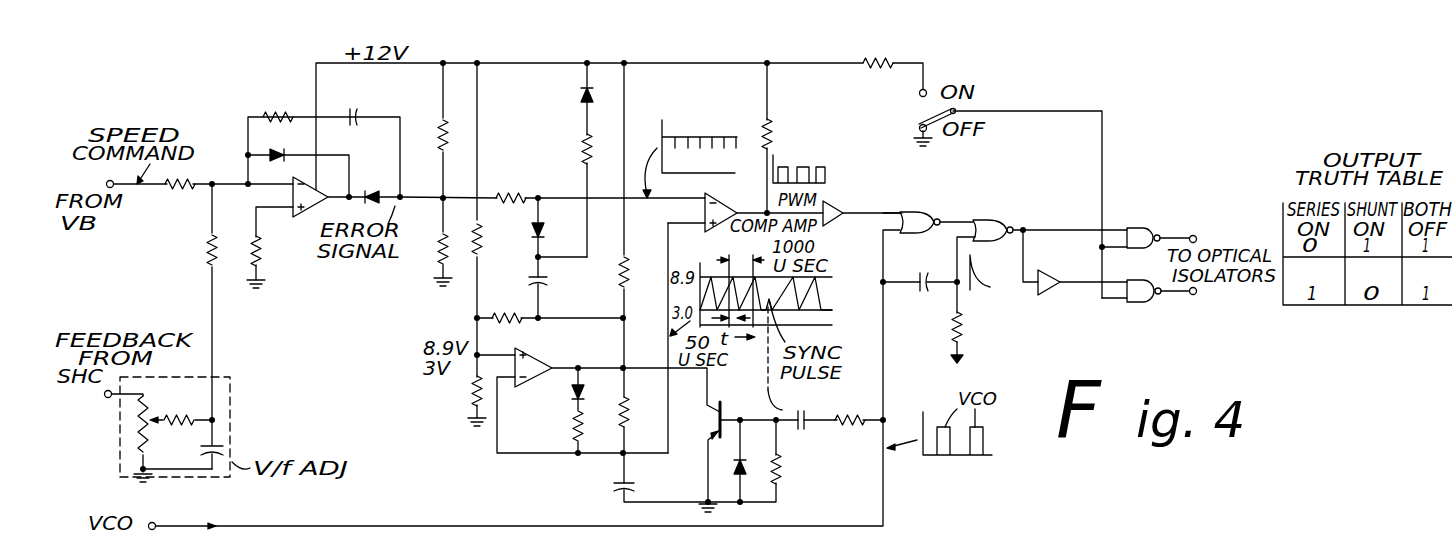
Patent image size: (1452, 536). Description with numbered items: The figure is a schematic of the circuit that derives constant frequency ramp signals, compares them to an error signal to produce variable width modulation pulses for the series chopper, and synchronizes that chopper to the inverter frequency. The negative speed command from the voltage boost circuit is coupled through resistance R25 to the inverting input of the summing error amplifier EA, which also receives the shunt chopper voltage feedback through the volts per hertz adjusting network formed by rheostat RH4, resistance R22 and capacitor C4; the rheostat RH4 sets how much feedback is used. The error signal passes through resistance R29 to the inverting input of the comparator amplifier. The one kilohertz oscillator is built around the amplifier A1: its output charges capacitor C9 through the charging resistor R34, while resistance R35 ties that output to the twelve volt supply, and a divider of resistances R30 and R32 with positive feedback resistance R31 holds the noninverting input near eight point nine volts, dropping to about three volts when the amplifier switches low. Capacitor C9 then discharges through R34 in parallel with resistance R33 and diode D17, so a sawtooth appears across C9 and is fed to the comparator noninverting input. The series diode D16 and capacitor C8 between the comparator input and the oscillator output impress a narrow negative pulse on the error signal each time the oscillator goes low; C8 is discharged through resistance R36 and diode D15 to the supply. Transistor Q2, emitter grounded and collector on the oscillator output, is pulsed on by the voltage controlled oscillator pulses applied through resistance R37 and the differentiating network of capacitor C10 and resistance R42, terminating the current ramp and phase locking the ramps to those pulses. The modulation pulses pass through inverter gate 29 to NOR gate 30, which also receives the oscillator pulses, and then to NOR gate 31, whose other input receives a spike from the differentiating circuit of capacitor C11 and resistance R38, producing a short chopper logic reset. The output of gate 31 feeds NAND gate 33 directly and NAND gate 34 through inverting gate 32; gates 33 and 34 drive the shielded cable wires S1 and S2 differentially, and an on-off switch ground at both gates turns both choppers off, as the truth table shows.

The inverter gate 29 is at (836, 205).
The NOR gate 30 is at (908, 215).
The NOR gate 31 is at (983, 221).
The inverting gate 32 is at (1046, 296).
The NAND gate 33 is at (1135, 228).
The NAND gate 34 is at (1134, 304).
The error operational amplifier EA is at (292, 189).
The amplifier A1 is at (546, 353).
The transistor Q2 is at (723, 403).
The resistance R25 is at (182, 194).
The resistance R22 is at (178, 416).
The rheostat RH4 is at (137, 445).
The capacitor C4 is at (223, 448).
The resistance R29 is at (513, 190).
The resistance R30 is at (480, 252).
The positive feedback resistance R31 is at (506, 312).
The resistance R32 is at (470, 393).
The resistance R33 is at (572, 430).
The charging resistor R34 is at (641, 398).
The resistance R35 is at (622, 286).
The resistance R36 is at (580, 150).
The resistance R37 is at (852, 430).
The resistance R38 is at (962, 326).
The resistance R42 is at (782, 470).
The diode D15 is at (580, 95).
The diode D16 is at (545, 232).
The diode D17 is at (572, 400).
The capacitor C8 is at (547, 282).
The capacitor C9 is at (616, 488).
The capacitor C10 is at (804, 410).
The capacitor C11 is at (922, 294).
The shielded cable wire S1 is at (1175, 238).
The shielded cable wire S2 is at (1178, 294).